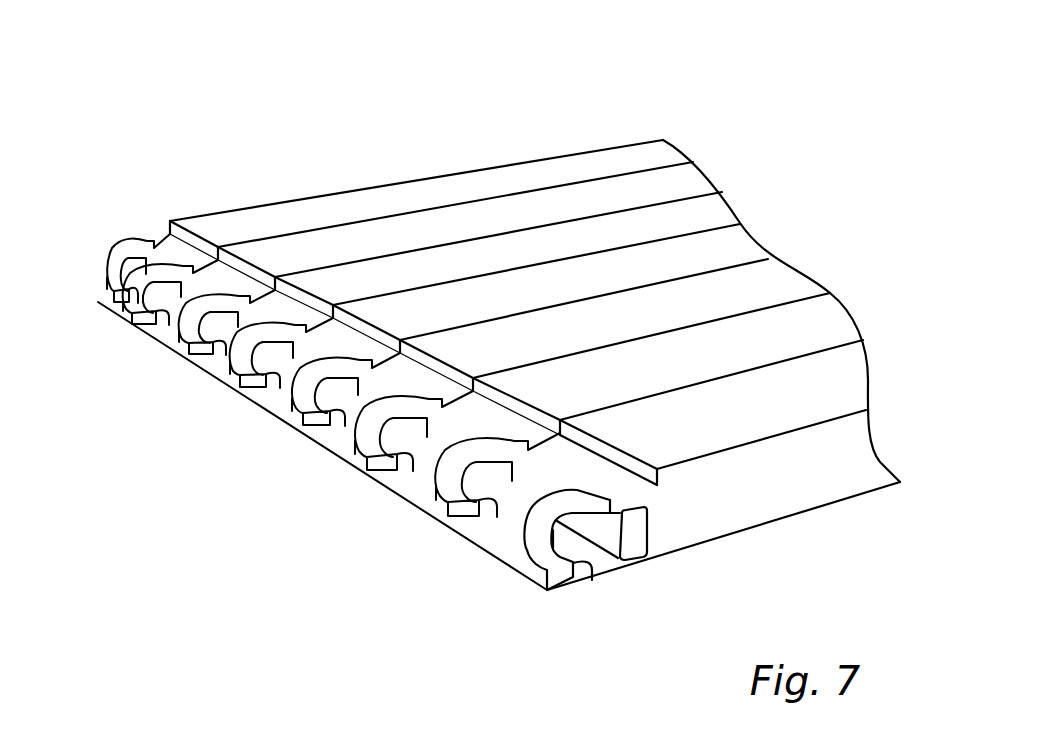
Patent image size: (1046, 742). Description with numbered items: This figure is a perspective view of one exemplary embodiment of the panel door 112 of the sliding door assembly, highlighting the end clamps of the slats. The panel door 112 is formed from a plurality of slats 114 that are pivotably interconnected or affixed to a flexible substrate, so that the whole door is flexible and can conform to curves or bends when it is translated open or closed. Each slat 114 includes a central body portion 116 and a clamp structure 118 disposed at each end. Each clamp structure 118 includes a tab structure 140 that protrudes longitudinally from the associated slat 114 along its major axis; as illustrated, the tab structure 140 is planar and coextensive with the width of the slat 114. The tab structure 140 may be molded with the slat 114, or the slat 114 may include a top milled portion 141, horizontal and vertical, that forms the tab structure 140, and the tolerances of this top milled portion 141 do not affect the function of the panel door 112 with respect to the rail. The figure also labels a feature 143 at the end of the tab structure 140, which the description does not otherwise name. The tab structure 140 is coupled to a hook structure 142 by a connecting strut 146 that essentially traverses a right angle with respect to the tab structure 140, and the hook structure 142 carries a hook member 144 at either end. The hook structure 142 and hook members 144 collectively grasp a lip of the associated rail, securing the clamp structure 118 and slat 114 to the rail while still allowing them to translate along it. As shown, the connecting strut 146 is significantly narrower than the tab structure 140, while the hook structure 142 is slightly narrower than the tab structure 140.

The panel door 112 is at (738, 143).
The slat 114 is at (752, 347).
The central body portion 116 is at (782, 488).
The clamp structure 118 is at (492, 598).
The tab structure 140 is at (611, 523).
The top milled portion 141 is at (550, 459).
The hook structure 142 is at (556, 593).
The pin head 143 is at (634, 548).
The hook member 144 is at (580, 577).
The connecting strut 146 is at (522, 498).